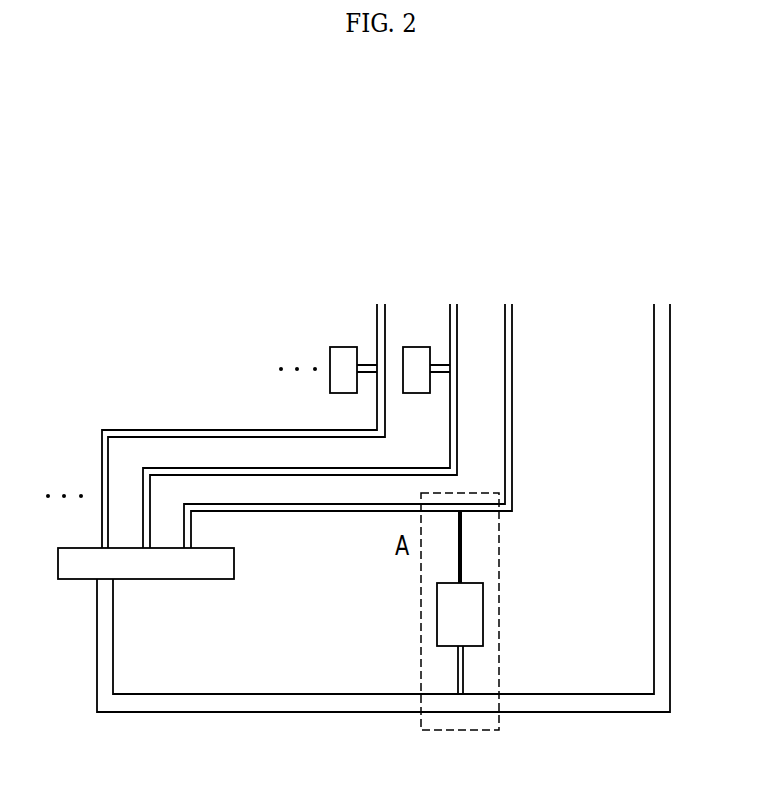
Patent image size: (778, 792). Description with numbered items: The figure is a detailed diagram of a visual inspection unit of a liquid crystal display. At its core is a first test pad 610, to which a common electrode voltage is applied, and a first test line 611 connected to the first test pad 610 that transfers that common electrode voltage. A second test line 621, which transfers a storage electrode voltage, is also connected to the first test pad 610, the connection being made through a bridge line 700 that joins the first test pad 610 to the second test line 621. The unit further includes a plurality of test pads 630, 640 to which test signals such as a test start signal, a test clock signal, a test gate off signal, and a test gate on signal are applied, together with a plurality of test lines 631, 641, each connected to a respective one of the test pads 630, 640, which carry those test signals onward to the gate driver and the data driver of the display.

The first test line 611 is at (579, 693).
The first test pad 610 is at (483, 598).
The bridge line 700 is at (463, 535).
The second test line 621 is at (512, 389).
The test pad 630 is at (417, 348).
The test line 631 is at (460, 318).
The test pad 640 is at (332, 347).
The test line 641 is at (377, 325).